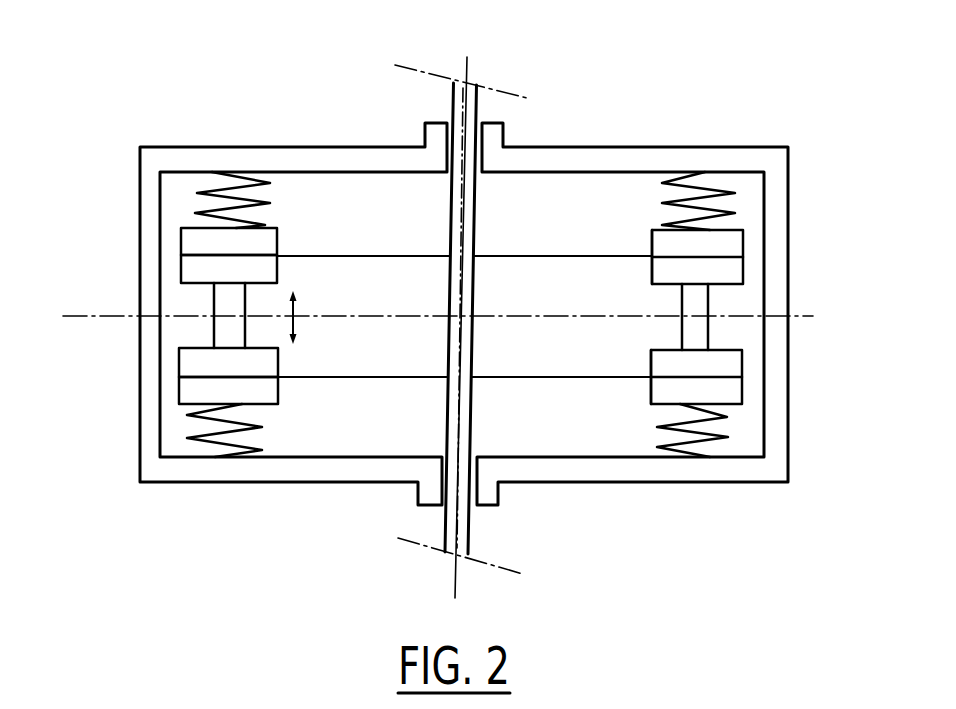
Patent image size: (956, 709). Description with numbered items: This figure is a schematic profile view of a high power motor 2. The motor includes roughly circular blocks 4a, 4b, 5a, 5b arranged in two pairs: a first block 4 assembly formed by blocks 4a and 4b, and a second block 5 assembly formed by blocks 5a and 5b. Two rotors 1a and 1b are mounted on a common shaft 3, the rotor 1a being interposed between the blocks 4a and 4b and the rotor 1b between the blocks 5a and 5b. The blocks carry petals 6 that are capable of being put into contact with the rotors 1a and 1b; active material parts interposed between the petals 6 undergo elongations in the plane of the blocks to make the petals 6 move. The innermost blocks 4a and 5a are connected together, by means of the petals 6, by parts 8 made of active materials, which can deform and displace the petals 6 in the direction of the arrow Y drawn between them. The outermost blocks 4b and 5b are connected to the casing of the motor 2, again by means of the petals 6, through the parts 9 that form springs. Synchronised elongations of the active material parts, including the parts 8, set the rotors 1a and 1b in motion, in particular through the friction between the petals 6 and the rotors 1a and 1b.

The rotor 1a is at (512, 256).
The rotor 1b is at (512, 377).
The high power motor 2 is at (140, 421).
The common shaft 3 is at (477, 202).
The block 4 is at (746, 243).
The innermost block 4a is at (277, 263).
The outermost block 4b is at (277, 238).
The block 5 is at (750, 388).
The innermost block 5a is at (279, 355).
The outermost block 5b is at (278, 390).
The petals 6 is at (652, 242).
The parts in active materials 8 is at (213, 323).
The parts forming springs 9 is at (213, 188).
The displacement direction Y is at (313, 347).